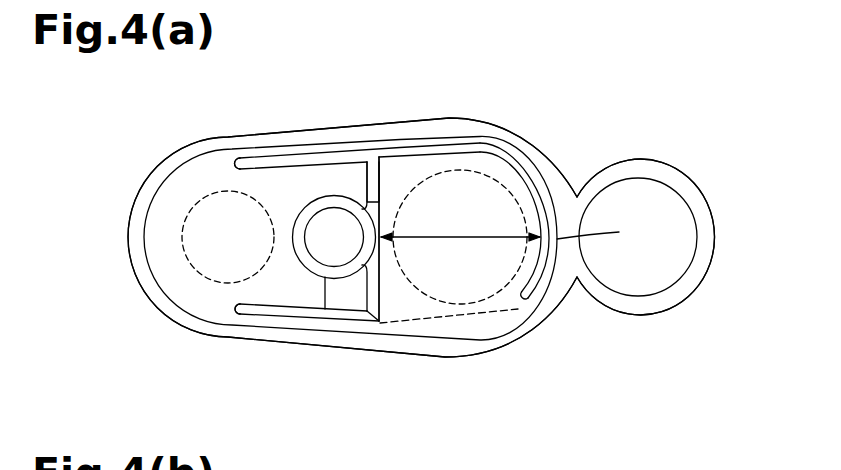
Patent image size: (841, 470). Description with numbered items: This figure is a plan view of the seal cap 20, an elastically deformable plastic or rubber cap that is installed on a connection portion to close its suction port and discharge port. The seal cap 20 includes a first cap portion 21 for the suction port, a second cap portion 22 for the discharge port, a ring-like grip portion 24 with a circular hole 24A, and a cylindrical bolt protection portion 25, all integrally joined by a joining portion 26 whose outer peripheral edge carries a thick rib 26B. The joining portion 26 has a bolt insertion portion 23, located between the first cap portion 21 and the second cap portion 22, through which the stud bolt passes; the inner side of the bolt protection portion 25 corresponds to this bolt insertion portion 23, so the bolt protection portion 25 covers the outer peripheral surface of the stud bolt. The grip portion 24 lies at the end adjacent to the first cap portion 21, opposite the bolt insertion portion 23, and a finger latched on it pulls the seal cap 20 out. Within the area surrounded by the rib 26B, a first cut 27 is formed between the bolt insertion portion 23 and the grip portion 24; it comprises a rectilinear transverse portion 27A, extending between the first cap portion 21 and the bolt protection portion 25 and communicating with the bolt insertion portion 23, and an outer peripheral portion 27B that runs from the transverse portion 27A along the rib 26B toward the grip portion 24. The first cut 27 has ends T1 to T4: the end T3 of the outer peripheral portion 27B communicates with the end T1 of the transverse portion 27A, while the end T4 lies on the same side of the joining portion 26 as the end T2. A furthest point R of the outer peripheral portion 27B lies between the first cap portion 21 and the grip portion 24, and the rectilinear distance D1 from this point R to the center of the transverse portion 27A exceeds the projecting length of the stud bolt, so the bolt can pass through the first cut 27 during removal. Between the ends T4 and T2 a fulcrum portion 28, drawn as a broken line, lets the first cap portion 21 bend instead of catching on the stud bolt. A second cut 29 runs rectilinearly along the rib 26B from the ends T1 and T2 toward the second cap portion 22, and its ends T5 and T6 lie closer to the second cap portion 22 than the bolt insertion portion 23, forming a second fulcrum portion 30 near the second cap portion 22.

The seal cap 20 is at (140, 306).
The first cap portion 21 is at (513, 150).
The second cap portion 22 is at (163, 172).
The bolt insertion portion 23 is at (325, 247).
The grip portion 24 is at (647, 316).
The circular hole 24A is at (630, 278).
The bolt protection portion 25 is at (326, 318).
The joining portion 26 is at (408, 170).
The rib 26B is at (296, 314).
The first cut 27 is at (394, 292).
The transverse portion 27A is at (380, 300).
The outer peripheral portion 27B is at (534, 283).
The fulcrum portion 28 is at (444, 312).
The second cut 29 is at (313, 163).
The second fulcrum portion 30 is at (225, 160).
The end of transverse portion T1 is at (373, 156).
The end of transverse portion T2 is at (377, 325).
The end of outer peripheral portion T3 is at (373, 182).
The end of outer peripheral portion T4 is at (528, 305).
The end of second cut T5 is at (238, 158).
The end of second cut T6 is at (238, 316).
The rectilinear distance D1 is at (460, 227).
The furthest point R is at (597, 234).